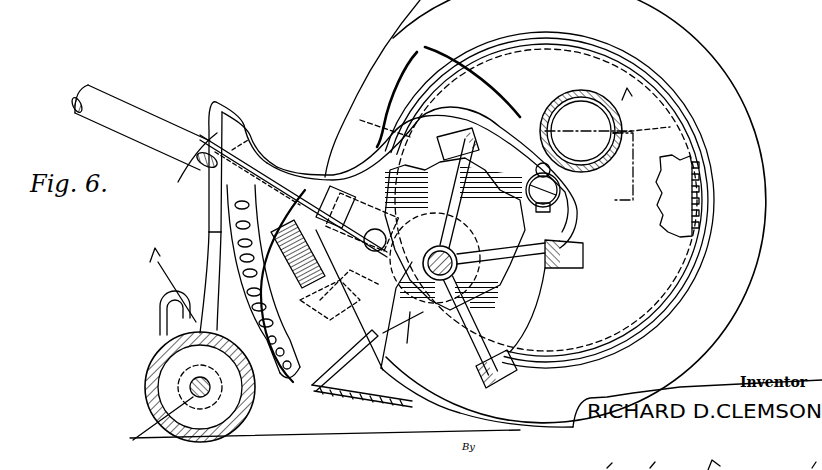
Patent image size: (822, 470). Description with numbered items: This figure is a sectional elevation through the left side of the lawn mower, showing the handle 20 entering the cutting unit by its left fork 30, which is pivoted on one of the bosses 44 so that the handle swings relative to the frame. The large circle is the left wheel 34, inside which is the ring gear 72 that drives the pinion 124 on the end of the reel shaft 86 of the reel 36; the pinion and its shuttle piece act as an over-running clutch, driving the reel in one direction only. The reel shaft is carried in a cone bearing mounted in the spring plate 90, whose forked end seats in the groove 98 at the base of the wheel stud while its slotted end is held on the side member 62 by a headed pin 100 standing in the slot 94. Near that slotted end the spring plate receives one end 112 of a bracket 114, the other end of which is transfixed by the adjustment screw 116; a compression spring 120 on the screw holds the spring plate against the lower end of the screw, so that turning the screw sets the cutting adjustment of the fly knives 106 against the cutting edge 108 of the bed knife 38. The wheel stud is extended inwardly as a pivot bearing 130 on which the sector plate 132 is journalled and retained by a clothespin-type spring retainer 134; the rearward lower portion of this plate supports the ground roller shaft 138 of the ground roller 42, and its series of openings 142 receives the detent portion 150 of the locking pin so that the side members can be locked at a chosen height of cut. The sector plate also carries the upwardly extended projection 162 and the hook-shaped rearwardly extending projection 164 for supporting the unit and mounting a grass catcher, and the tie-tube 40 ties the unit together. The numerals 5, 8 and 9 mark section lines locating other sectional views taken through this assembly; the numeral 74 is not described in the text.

The handle 20 is at (90, 123).
The left fork 30 is at (80, 106).
The left wheel 34 is at (683, 22).
The reel 36 is at (583, 258).
The bed knife 38 is at (347, 403).
The tie-tube 40 is at (655, 128).
The ground roller 42 is at (160, 415).
The bosses 44 is at (375, 229).
The side member 62 is at (609, 180).
The ring gear 72 is at (685, 170).
The wheel rim 74 is at (568, 60).
The reel shaft 86 is at (501, 268).
The spring plate 90 is at (405, 316).
The slot 94 is at (280, 378).
The groove 98 is at (527, 183).
The headed pin 100 is at (345, 395).
The fly knives 106 is at (480, 147).
The cutting edge 108 is at (420, 390).
The end of bracket 112 is at (347, 300).
The bracket 114 is at (303, 242).
The adjustment screw 116 is at (232, 157).
The compression spring 120 is at (225, 215).
The pinion 124 is at (495, 306).
The pivot bearing 130 is at (575, 172).
The sector plate 132 is at (280, 162).
The spring retainer 134 is at (588, 178).
The ground roller shaft 138 is at (160, 438).
The openings 142 is at (236, 262).
The detent portion 150 is at (293, 286).
The upwardly extended projection 162 is at (218, 100).
The rearwardly extending projection 164 is at (160, 318).
The section line 5- 5 is at (225, 388).
The section line 8- 8 is at (198, 105).
The section line 9- 9 is at (333, 287).